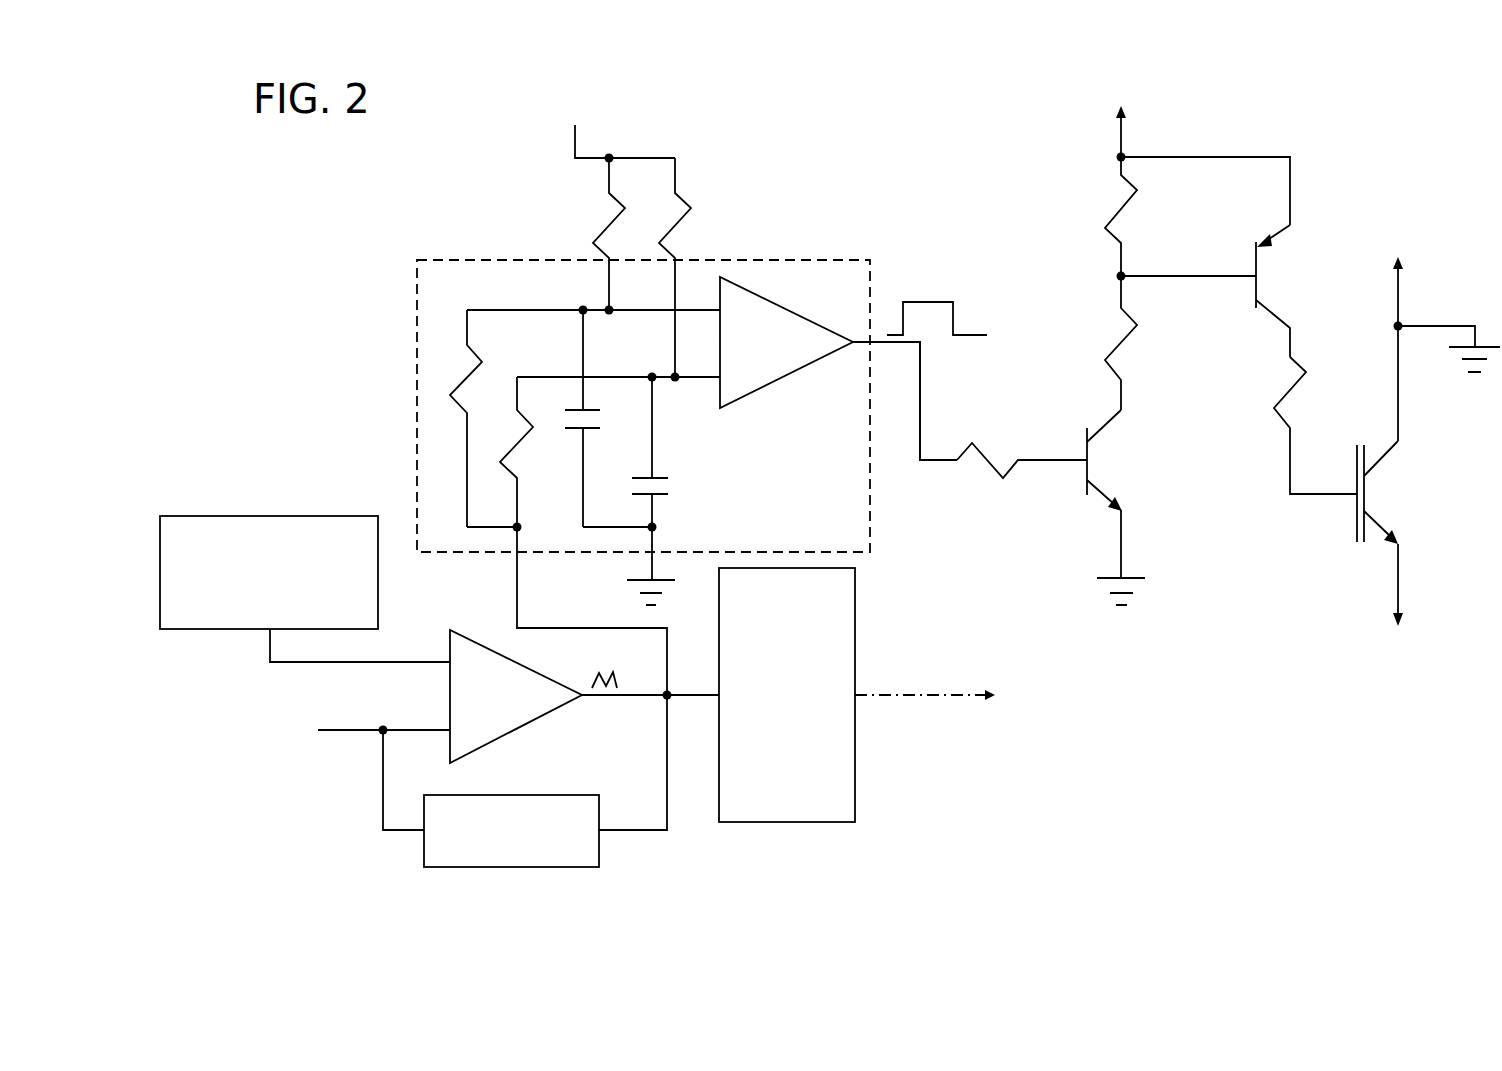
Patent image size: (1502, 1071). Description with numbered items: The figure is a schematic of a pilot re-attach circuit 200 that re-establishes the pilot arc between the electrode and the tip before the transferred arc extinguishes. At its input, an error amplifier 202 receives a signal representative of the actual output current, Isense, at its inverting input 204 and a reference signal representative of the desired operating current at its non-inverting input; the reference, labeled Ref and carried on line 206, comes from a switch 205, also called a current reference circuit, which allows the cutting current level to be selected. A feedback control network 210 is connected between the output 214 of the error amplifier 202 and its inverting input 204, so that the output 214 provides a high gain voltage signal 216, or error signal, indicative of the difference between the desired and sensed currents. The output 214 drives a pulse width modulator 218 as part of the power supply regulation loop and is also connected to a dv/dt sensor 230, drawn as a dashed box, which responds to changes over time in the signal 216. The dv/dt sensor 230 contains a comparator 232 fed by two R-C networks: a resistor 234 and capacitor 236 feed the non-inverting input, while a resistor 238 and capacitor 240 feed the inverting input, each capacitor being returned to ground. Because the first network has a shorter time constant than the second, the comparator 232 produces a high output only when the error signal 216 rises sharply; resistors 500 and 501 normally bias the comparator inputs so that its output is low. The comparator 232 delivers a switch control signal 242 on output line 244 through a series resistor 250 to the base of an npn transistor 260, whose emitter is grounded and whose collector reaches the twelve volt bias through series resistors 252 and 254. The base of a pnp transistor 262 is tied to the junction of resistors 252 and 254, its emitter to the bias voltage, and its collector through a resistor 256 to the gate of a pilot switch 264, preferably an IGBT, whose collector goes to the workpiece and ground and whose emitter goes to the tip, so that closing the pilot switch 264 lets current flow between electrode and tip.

The pilot re-attach circuit 200 is at (892, 71).
The error amplifier 202 is at (464, 632).
The inverting input 204 is at (362, 729).
The switch 205 is at (270, 514).
The reference signal input 206 is at (405, 661).
The feedback control network 210 is at (510, 868).
The output 214 is at (633, 697).
The high gain voltage signal 216 is at (626, 687).
The pulse width modulator 218 is at (856, 797).
The dv/dt sensor 230 is at (533, 252).
The comparator 232 is at (795, 385).
The resistor 234 is at (466, 374).
The capacitor 236 is at (575, 405).
The resistor 238 is at (516, 443).
The capacitor 240 is at (658, 474).
The switch control signal 242 is at (953, 296).
The output line 244 is at (922, 411).
The resistor 250 is at (964, 452).
The resistor 252 is at (1108, 232).
The resistor 254 is at (1106, 362).
The resistor 256 is at (1274, 410).
The npn transistor 260 is at (1106, 494).
The pnp transistor 262 is at (1252, 268).
The pilot switch 264 is at (1382, 527).
The resistor 500 is at (606, 230).
The resistor 501 is at (712, 200).